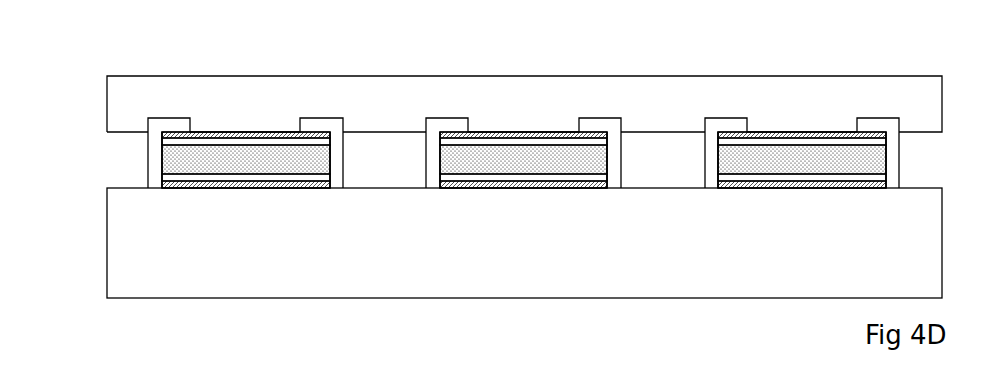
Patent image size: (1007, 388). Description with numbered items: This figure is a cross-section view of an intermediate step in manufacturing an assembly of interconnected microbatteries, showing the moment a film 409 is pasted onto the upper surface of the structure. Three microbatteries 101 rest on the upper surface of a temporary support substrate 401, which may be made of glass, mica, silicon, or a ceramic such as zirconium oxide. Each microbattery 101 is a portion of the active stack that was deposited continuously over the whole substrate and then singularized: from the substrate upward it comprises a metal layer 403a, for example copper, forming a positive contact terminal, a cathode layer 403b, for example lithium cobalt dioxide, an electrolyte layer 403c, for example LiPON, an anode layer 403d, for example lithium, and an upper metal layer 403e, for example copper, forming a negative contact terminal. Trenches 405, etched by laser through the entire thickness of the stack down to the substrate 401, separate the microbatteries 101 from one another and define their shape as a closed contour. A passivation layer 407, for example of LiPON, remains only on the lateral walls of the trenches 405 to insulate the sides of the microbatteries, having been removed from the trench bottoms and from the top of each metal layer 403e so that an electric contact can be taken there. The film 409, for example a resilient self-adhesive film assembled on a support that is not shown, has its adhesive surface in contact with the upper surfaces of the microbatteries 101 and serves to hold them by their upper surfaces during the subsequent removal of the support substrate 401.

The microbattery 101 is at (300, 190).
The temporary support substrate 401 is at (147, 269).
The metal layer 403a is at (176, 190).
The cathode layer 403b is at (228, 189).
The electrolyte layer 403c is at (181, 160).
The anode layer 403d is at (238, 145).
The metal layer 403e is at (292, 135).
The trenches 405 is at (390, 161).
The passivation layer 407 is at (448, 123).
The film 409 is at (122, 102).